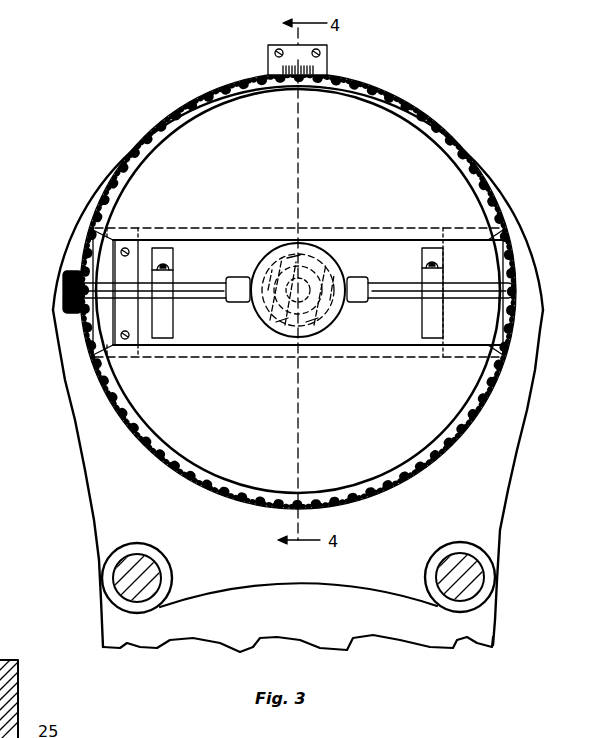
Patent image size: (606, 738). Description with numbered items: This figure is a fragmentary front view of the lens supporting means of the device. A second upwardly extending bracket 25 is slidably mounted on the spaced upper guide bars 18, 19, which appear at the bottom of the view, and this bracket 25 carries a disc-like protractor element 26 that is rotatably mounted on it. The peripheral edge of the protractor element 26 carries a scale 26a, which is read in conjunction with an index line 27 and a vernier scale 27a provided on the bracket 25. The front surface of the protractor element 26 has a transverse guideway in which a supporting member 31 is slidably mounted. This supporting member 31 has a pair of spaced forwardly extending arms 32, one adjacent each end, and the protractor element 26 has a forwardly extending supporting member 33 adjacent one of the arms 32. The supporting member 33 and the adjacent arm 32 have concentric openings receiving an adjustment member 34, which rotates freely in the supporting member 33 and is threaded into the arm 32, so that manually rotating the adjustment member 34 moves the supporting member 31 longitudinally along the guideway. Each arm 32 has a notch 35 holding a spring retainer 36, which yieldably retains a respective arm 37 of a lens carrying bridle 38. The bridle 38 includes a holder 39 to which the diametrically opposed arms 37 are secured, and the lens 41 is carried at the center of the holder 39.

The upper guide bar 18 is at (477, 583).
The upper guide bar 19 is at (118, 578).
The bracket 25 is at (456, 102).
The protractor element 26 is at (300, 282).
The scale 26a is at (388, 97).
The index line 27 is at (328, 297).
The vernier scale 27a is at (328, 58).
The supporting member 31 is at (373, 250).
The forwardly extending arm 32 is at (167, 320).
The supporting member 33 is at (130, 267).
The adjustment member 34 is at (62, 293).
The notch 35 is at (170, 263).
The spring retainer 36 is at (163, 272).
The arm 37 is at (207, 298).
The lens carrying bridle 38 is at (238, 266).
The holder 39 is at (242, 305).
The lens 41 is at (330, 320).